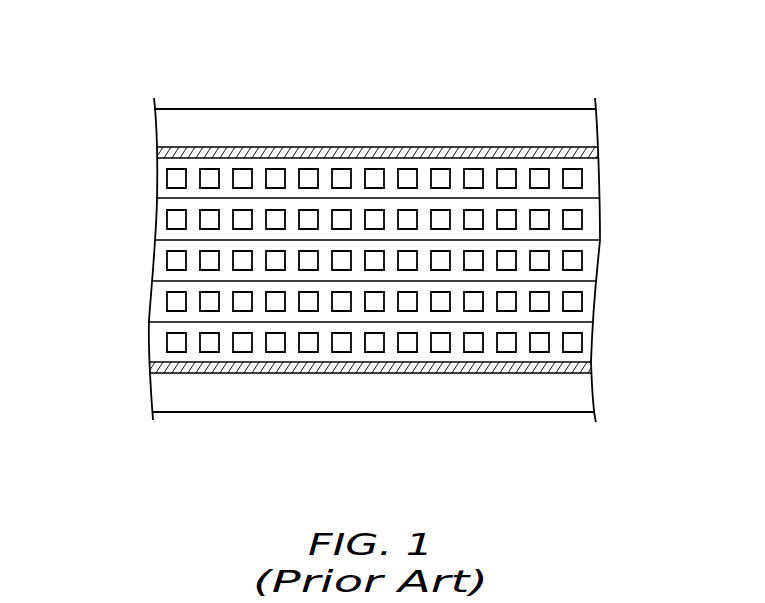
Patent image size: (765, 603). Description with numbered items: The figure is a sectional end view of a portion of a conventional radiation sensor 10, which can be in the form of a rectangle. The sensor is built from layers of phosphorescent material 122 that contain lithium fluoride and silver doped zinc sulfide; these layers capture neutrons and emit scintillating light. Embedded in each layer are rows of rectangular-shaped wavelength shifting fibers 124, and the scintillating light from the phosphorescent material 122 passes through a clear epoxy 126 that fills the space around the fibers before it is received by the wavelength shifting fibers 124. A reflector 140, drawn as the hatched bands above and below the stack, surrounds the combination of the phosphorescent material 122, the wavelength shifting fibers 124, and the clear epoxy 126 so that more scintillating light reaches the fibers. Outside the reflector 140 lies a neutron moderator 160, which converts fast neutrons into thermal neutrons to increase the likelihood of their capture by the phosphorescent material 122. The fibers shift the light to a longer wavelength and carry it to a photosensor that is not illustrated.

The radiation sensor 10 is at (584, 45).
The phosphorescent material 122 is at (141, 318).
The wavelength shifting fibers 124 is at (575, 343).
The clear epoxy 126 is at (322, 253).
The reflector 140 is at (227, 147).
The neutron moderator 160 is at (584, 137).